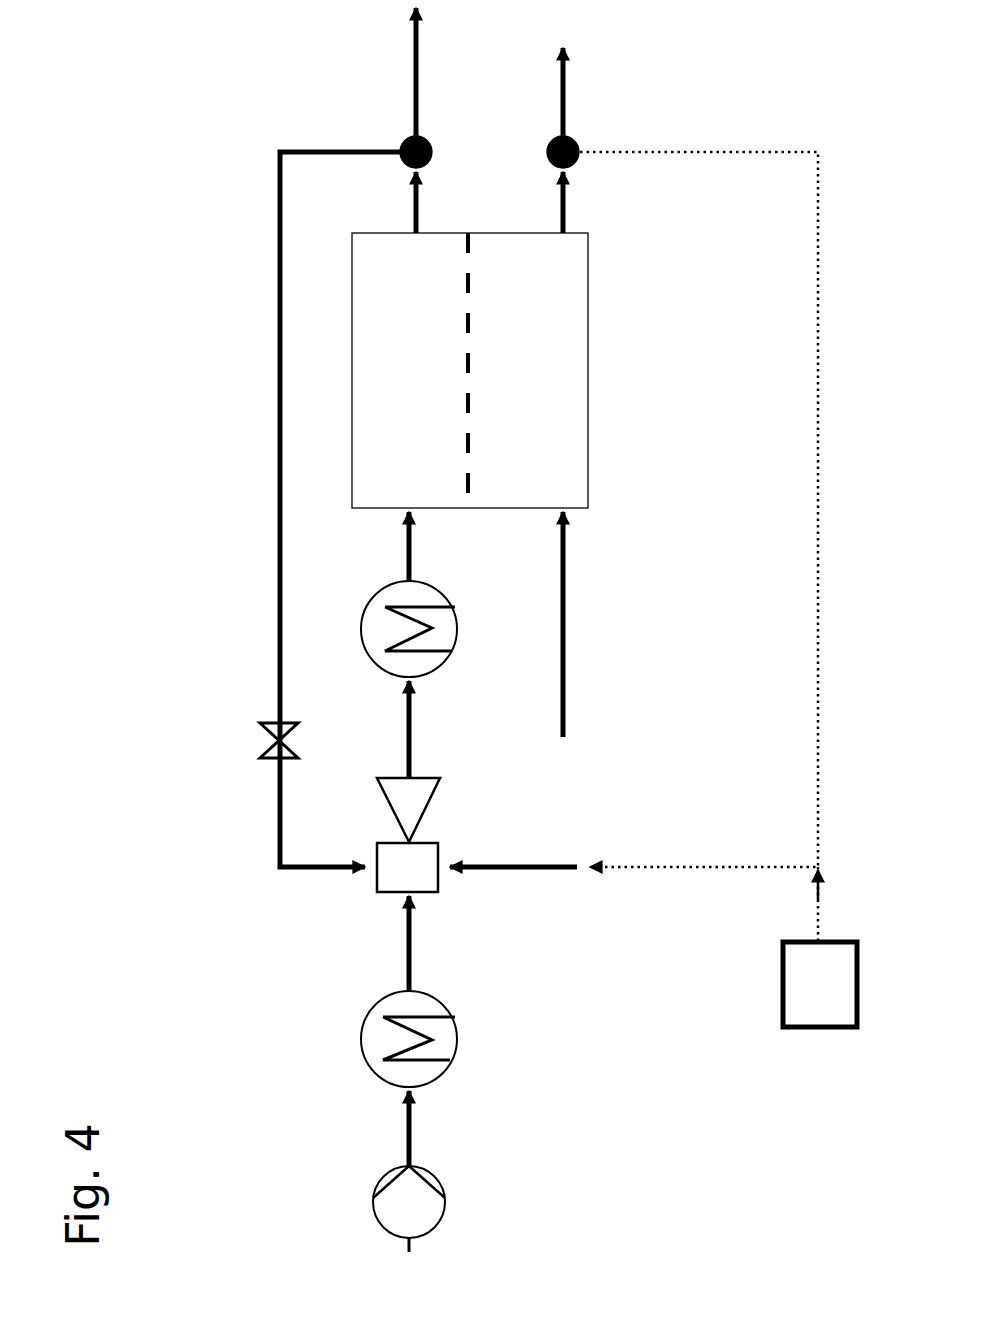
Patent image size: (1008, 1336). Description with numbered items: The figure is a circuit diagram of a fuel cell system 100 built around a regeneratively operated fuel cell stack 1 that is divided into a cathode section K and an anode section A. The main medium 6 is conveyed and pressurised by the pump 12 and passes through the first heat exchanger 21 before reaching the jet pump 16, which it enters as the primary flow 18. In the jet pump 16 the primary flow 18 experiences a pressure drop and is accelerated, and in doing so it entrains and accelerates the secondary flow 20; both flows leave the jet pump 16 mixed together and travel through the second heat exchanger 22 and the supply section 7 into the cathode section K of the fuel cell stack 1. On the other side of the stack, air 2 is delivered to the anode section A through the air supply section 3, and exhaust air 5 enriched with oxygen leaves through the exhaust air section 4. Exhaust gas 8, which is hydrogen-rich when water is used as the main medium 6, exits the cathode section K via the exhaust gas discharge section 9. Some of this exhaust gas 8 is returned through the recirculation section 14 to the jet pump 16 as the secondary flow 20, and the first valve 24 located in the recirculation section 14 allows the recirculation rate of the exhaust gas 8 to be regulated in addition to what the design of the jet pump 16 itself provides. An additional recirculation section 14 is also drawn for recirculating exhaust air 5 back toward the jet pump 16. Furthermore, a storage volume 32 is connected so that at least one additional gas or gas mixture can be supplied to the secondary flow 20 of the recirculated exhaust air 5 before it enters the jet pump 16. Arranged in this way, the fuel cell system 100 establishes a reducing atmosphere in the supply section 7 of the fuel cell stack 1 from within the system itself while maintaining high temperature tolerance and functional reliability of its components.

The fuel cell system 100 is at (205, 995).
The fuel cell stack 1 is at (358, 432).
The cathode section K is at (390, 353).
The anode section A is at (562, 353).
The air 2 is at (563, 670).
The air supply section 3 is at (570, 520).
The exhaust air section 4 is at (565, 213).
The exhaust air 5 is at (565, 52).
The main medium 6 is at (412, 1157).
The supply section 7 is at (383, 525).
The exhaust gas 8 is at (412, 58).
The exhaust gas discharge section 9 is at (410, 218).
The pump 12 is at (373, 1210).
The recirculation section 14 is at (276, 313).
The jet pump 16 is at (440, 885).
The primary flow 18 is at (412, 912).
The secondary flow 20 is at (337, 867).
The first heat exchanger 21 is at (362, 1070).
The second heat exchanger 22 is at (362, 650).
The first valve 24 is at (260, 725).
The storage volume 32 is at (827, 1027).